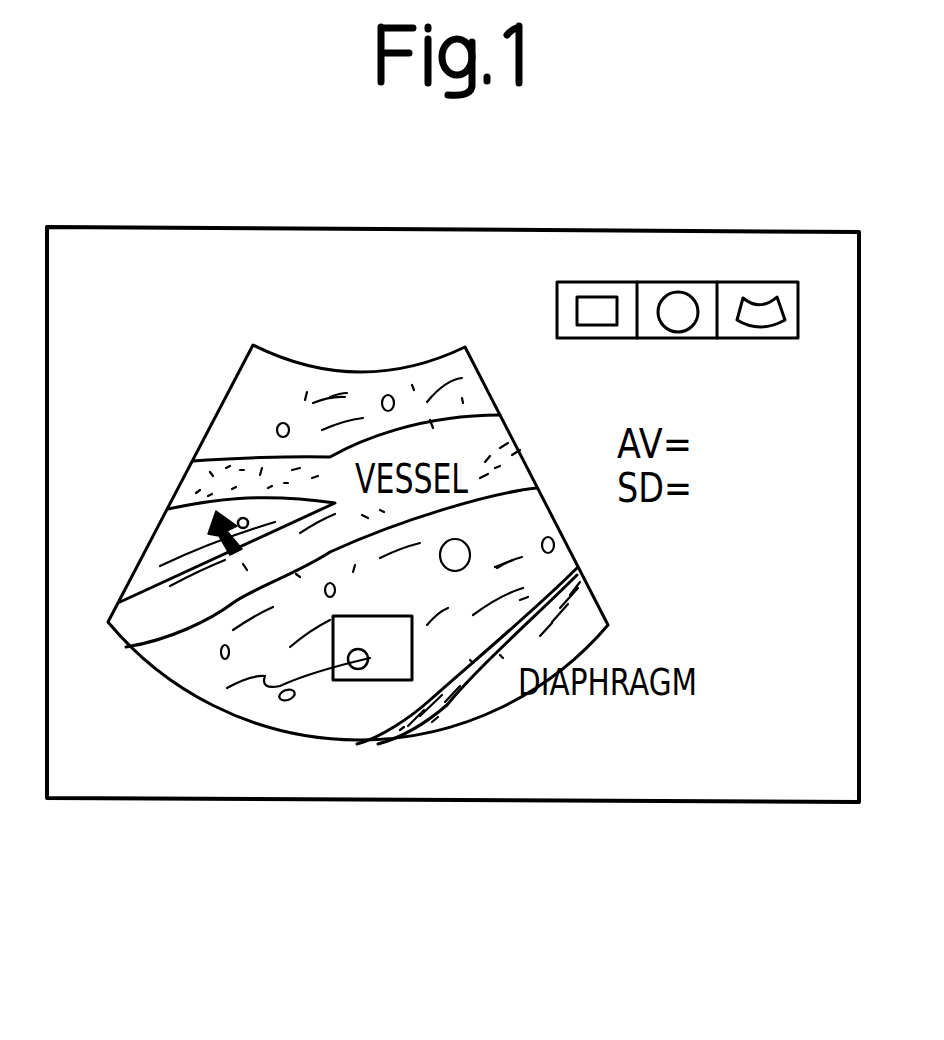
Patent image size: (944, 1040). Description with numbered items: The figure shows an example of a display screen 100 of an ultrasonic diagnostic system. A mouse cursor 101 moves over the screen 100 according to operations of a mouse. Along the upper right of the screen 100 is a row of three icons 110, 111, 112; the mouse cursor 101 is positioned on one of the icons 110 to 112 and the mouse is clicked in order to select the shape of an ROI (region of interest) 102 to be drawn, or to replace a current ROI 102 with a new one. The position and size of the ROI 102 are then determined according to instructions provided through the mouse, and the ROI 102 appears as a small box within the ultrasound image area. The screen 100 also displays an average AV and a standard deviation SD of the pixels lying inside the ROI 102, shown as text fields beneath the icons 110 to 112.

The display screen 100 is at (102, 227).
The mouse cursor 101 is at (222, 550).
The ROI (region of interest) 102 is at (367, 680).
The icon 110 is at (592, 318).
The icon 111 is at (673, 318).
The icon 112 is at (758, 320).